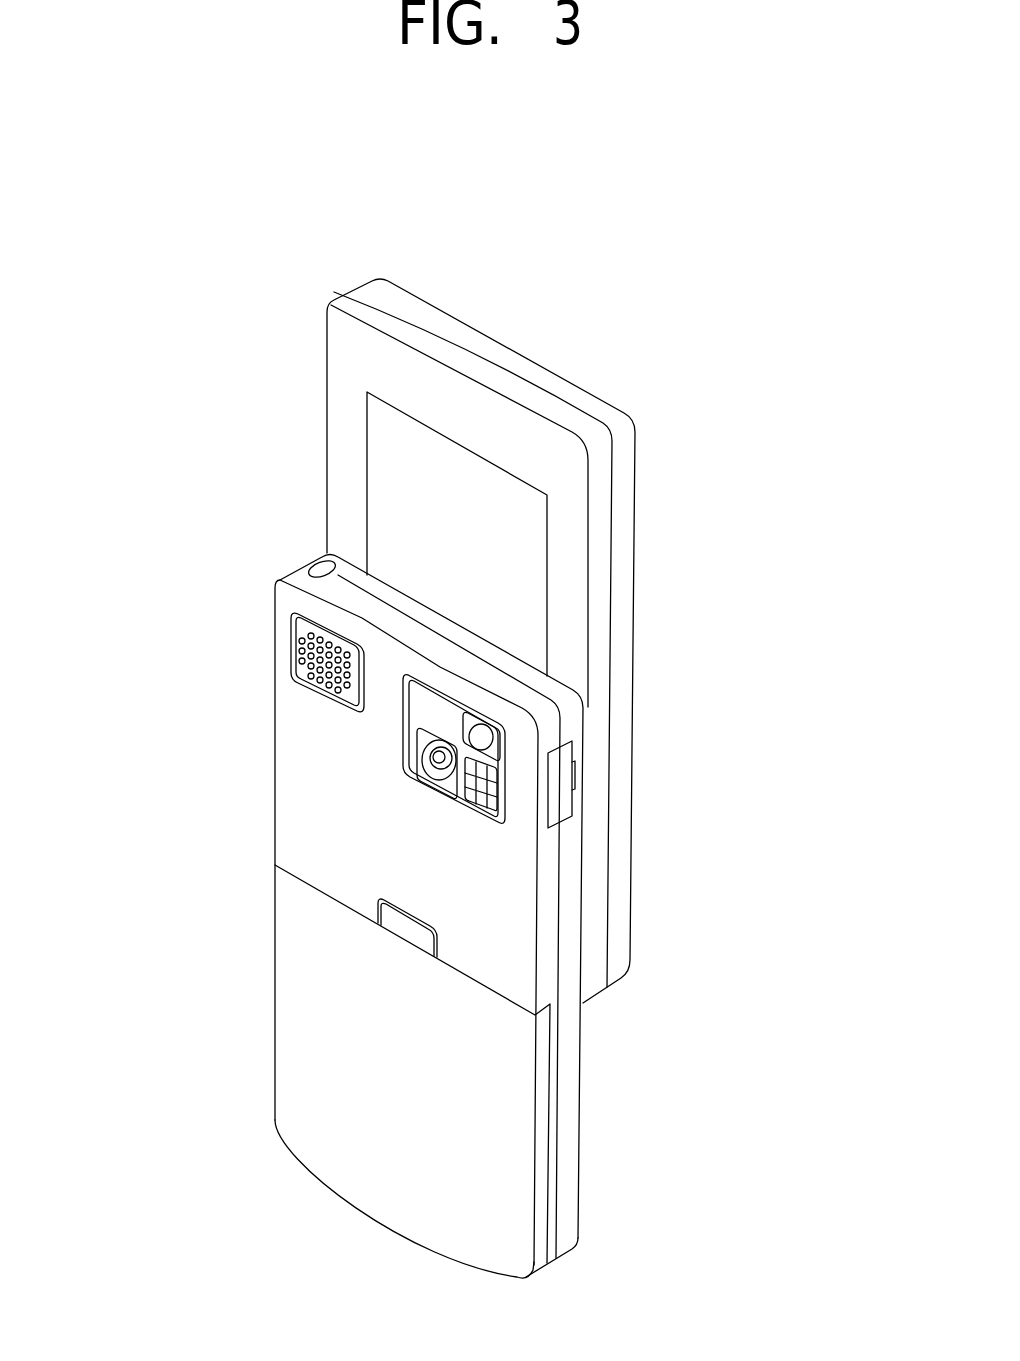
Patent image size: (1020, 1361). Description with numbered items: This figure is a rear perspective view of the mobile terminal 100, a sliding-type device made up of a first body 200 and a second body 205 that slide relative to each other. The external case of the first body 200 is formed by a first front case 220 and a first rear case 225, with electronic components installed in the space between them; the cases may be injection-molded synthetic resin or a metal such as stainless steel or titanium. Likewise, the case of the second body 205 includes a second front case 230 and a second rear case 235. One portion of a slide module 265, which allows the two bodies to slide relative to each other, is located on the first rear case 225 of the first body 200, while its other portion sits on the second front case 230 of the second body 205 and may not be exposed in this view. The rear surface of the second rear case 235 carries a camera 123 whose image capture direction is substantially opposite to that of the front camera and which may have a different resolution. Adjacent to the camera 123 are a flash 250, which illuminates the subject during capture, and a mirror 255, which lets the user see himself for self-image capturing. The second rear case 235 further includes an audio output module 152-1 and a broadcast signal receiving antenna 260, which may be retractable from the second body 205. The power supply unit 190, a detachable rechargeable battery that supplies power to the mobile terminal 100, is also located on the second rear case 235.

The mobile terminal 100 is at (652, 343).
The first body 200 is at (298, 383).
The first front case 220 is at (373, 286).
The first rear case 225 is at (357, 301).
The slide module 265 is at (356, 483).
The broadcast signal receiving antenna 260 is at (317, 570).
The second body 205 is at (255, 767).
The second front case 230 is at (572, 1032).
The second rear case 235 is at (547, 968).
The power supply unit 190 is at (290, 960).
The audio output module 152-1 is at (297, 653).
The camera 123 is at (440, 772).
The mirror 255 is at (483, 737).
The flash 250 is at (484, 796).